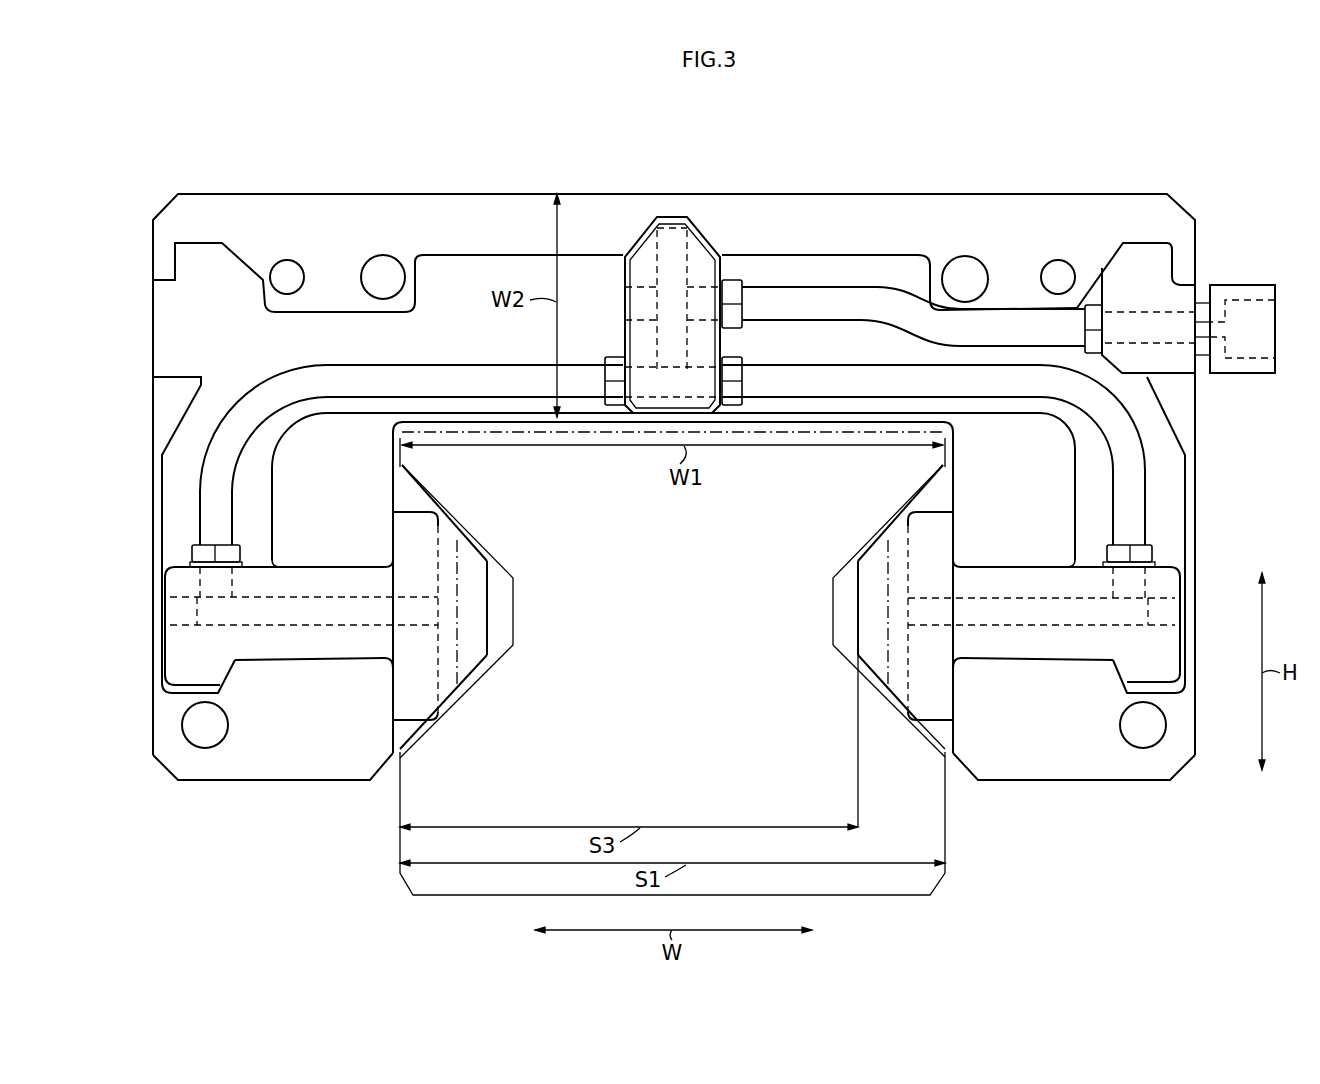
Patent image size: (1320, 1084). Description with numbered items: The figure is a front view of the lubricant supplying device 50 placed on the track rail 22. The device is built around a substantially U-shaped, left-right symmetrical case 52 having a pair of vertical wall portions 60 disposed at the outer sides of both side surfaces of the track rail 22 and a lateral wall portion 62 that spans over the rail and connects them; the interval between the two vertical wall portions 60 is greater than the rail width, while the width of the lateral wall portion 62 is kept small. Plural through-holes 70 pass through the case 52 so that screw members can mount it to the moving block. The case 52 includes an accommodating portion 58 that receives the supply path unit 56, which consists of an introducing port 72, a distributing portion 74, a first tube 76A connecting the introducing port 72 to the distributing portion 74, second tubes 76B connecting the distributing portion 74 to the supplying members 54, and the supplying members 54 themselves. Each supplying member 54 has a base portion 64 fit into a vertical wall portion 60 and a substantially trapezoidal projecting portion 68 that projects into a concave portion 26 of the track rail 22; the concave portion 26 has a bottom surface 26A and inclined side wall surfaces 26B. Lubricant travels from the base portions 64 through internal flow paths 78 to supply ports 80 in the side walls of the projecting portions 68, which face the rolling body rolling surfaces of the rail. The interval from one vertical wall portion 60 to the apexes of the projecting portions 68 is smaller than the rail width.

The track rail 22 is at (925, 899).
The concave portion 26 is at (508, 607).
The bottom surface 26A is at (830, 628).
The side wall surface 26B is at (835, 650).
The lubricant supplying device 50 is at (1138, 178).
The case 52 is at (1205, 229).
The supplying member 54 is at (494, 637).
The supply path unit 56 is at (268, 358).
The accommodating portion 58 is at (448, 262).
The vertical wall portion 60 is at (295, 782).
The lateral wall portion 62 is at (777, 193).
The base portion 64 is at (310, 661).
The projecting portion 68 is at (477, 540).
The through-hole 70 is at (388, 266).
The introducing port 72 is at (1258, 285).
The distributing portion 74 is at (622, 279).
The first tube 76A is at (827, 286).
The second tube 76B is at (230, 403).
The internal flow path 78 is at (312, 600).
The supply port 80 is at (449, 513).